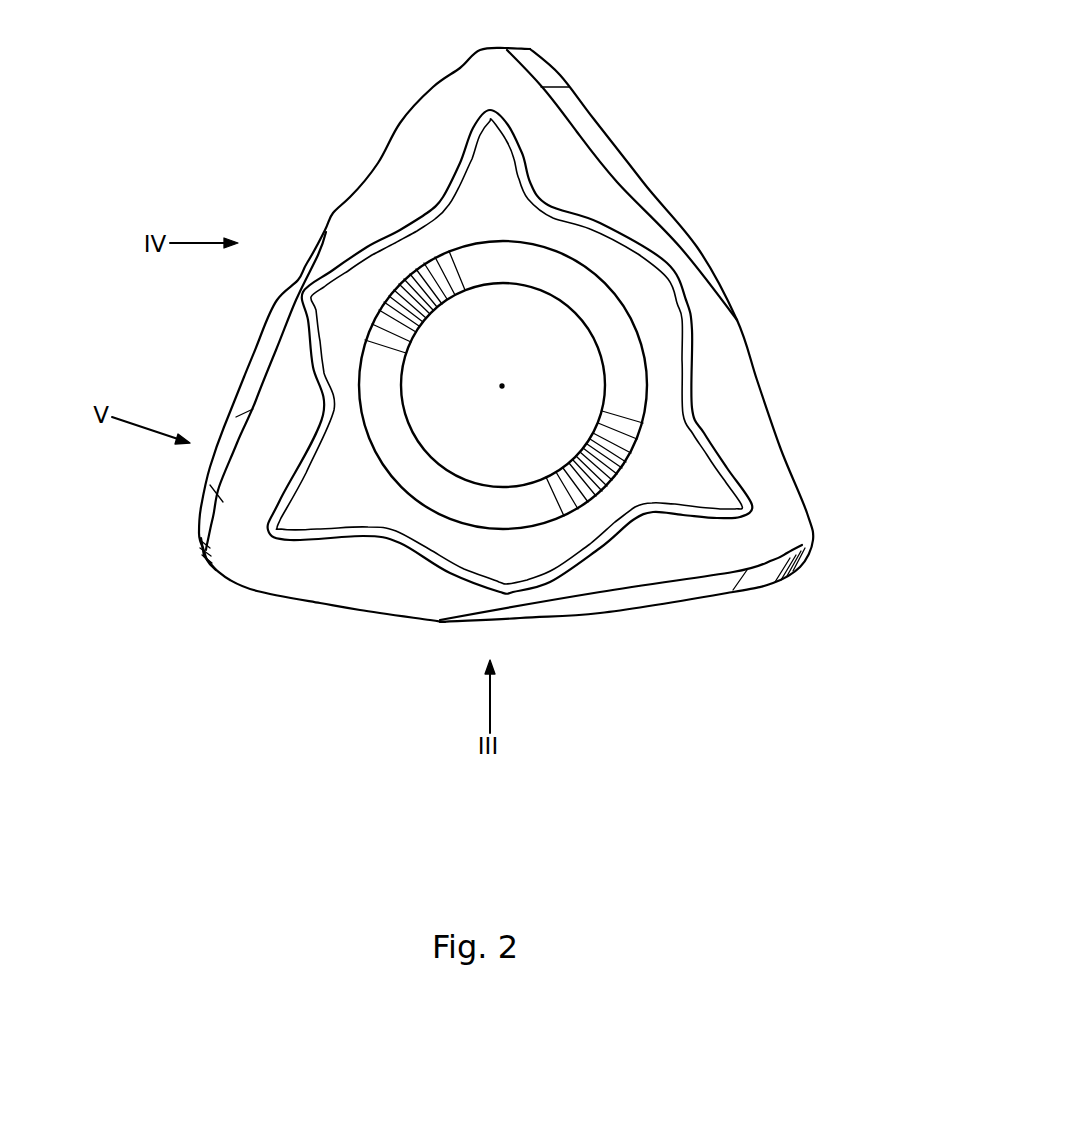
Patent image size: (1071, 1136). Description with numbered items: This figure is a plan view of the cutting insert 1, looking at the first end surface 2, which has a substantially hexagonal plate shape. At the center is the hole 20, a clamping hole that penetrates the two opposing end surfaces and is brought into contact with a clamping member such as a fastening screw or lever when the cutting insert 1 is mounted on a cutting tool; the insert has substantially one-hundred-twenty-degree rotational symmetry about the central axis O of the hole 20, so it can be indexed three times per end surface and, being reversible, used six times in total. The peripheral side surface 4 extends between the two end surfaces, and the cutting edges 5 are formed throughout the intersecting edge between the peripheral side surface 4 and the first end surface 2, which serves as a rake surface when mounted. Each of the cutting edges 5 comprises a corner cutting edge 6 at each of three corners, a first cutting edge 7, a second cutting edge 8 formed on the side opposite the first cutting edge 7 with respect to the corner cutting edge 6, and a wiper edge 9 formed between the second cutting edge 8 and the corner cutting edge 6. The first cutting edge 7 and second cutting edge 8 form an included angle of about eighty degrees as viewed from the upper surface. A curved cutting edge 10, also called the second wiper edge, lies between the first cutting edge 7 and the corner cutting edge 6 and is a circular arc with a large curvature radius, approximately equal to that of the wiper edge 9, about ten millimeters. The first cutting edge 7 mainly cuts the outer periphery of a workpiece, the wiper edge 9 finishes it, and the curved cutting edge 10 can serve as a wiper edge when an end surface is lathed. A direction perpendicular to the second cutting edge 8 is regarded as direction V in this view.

The cutting insert 1 is at (486, 385).
The first end surface 2 is at (470, 210).
The peripheral side surface 4 is at (663, 590).
The cutting edges 5 is at (320, 603).
The corner cutting edge 6 is at (200, 548).
The first cutting edge 7 is at (223, 443).
The second cutting edge 8 is at (235, 417).
The wiper edge 9 is at (205, 517).
The curved cutting edge 10 is at (203, 498).
The hole 20 is at (537, 377).
The central axis O is at (502, 387).